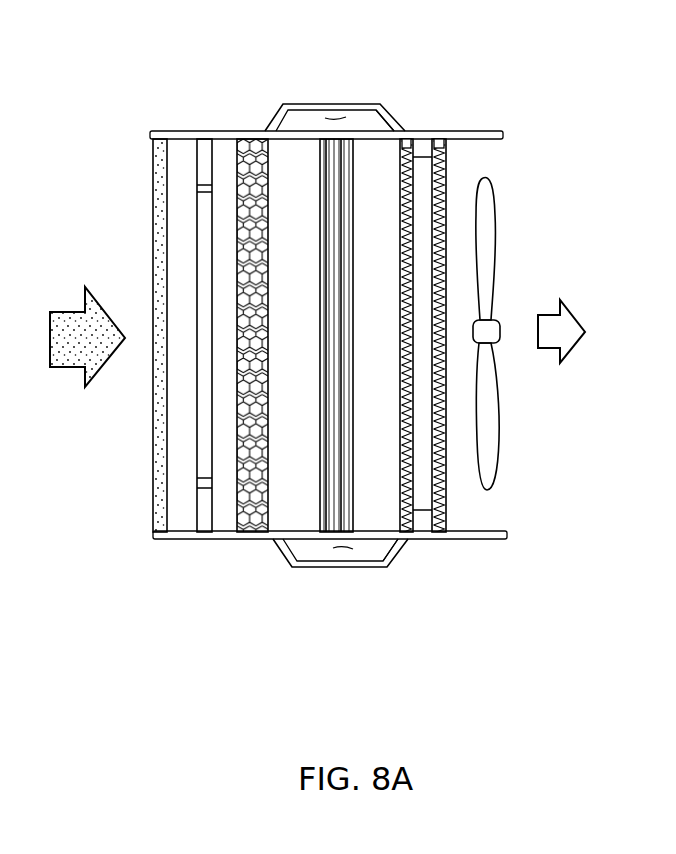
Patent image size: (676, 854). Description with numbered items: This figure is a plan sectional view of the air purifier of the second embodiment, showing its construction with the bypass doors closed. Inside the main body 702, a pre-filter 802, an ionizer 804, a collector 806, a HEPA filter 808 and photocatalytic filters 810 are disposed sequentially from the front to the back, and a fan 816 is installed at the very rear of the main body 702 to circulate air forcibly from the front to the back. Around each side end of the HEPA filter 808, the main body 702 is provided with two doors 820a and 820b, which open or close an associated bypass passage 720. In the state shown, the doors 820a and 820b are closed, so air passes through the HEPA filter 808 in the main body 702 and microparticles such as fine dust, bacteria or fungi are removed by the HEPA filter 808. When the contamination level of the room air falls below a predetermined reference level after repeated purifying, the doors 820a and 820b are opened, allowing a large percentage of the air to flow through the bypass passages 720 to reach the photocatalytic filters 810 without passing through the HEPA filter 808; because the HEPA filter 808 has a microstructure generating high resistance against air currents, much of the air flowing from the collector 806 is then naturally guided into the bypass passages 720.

The main body 702 is at (487, 129).
The bypass passage 720 is at (337, 117).
The pre-filter 802 is at (150, 134).
The ionizer 804 is at (203, 140).
The collector 806 is at (245, 140).
The HEPA filter 808 is at (335, 226).
The photocatalytic filters 810 is at (407, 132).
The fan 816 is at (487, 220).
The door 820a is at (283, 101).
The door 820b is at (380, 101).